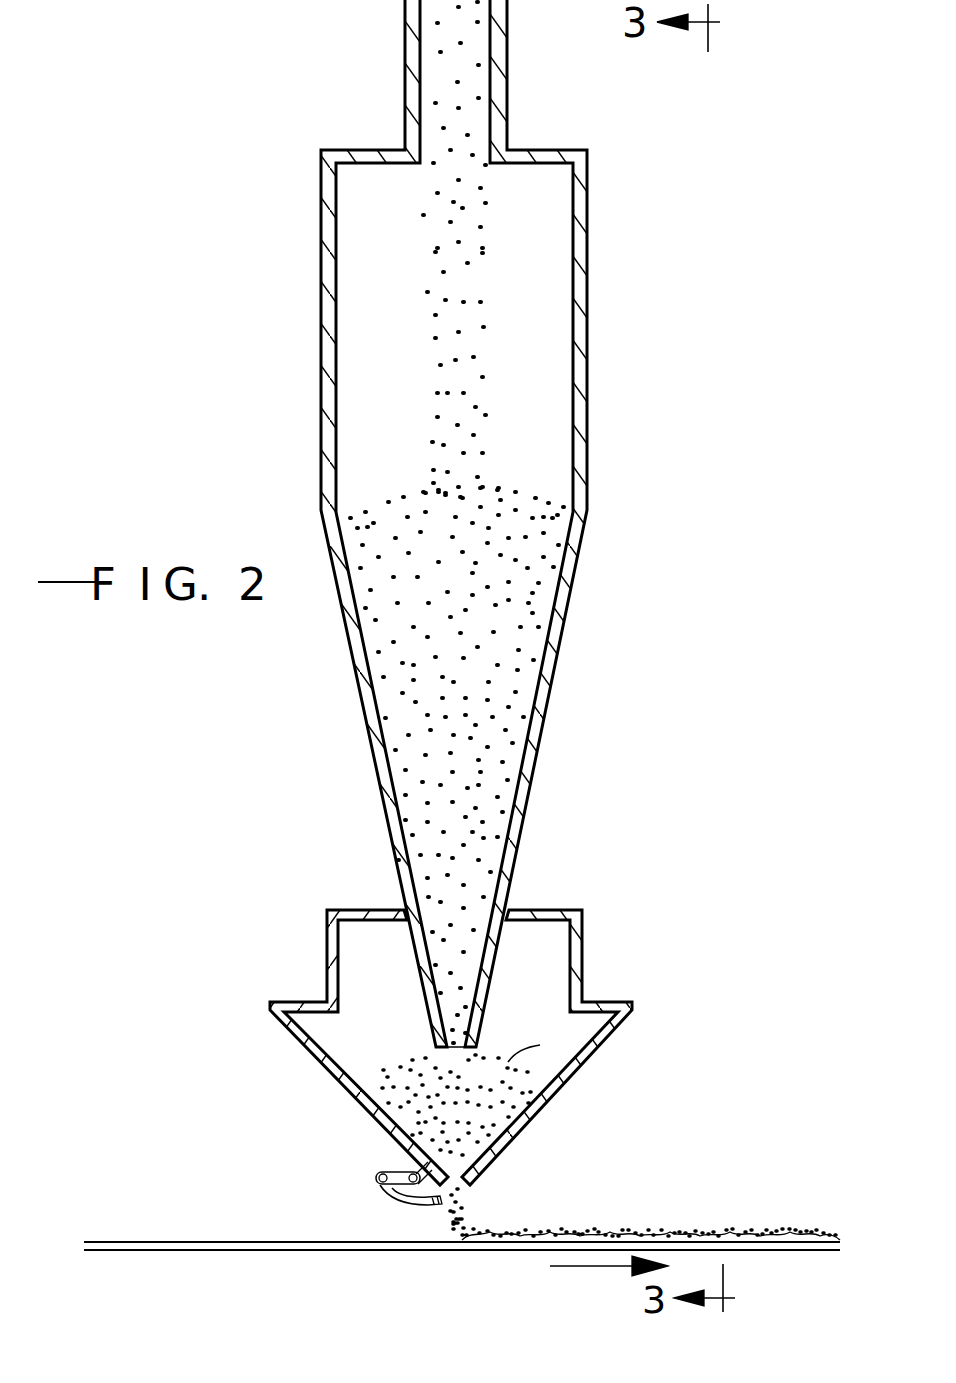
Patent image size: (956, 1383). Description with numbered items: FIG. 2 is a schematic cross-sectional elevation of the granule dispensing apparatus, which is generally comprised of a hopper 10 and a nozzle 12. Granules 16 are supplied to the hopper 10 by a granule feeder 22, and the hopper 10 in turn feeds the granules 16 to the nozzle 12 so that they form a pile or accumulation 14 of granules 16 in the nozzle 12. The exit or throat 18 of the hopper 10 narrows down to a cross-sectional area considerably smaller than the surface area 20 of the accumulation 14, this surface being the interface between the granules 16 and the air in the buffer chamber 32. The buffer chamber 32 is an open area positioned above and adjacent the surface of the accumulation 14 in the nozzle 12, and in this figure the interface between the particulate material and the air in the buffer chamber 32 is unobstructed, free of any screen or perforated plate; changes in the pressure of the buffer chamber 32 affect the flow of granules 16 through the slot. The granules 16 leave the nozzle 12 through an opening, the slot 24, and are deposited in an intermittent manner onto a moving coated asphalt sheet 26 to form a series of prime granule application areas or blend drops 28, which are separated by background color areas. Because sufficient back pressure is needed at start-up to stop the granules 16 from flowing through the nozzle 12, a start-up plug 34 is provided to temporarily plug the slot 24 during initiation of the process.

The hopper 10 is at (556, 672).
The nozzle 12 is at (562, 1092).
The accumulation 14 is at (398, 1108).
The granules 16 is at (398, 725).
The throat 18 is at (480, 1022).
The surface area 20 is at (540, 1045).
The granule feeder 22 is at (440, 78).
The slot 24 is at (463, 1186).
The coated asphalt sheet 26 is at (139, 1242).
The blend drops 28 is at (760, 1228).
The buffer chamber 32 is at (395, 1018).
The start-up plug 34 is at (388, 1192).